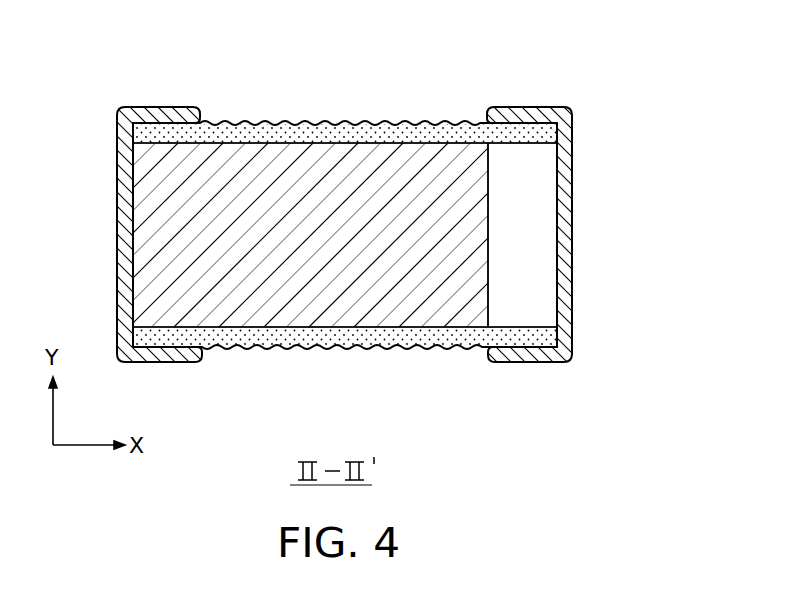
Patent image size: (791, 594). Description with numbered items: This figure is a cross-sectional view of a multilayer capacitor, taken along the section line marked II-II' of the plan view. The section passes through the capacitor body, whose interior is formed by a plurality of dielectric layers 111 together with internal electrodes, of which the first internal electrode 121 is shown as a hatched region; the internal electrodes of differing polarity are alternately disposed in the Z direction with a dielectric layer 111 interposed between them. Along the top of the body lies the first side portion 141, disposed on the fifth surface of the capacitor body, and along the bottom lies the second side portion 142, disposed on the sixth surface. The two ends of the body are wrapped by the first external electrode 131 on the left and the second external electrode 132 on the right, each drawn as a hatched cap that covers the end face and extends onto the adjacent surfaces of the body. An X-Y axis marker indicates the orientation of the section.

The dielectric layer 111 is at (542, 240).
The first internal electrode 121 is at (147, 240).
The first external electrode 131 is at (164, 108).
The second external electrode 132 is at (525, 108).
The first side portion 141 is at (307, 128).
The second side portion 142 is at (307, 343).